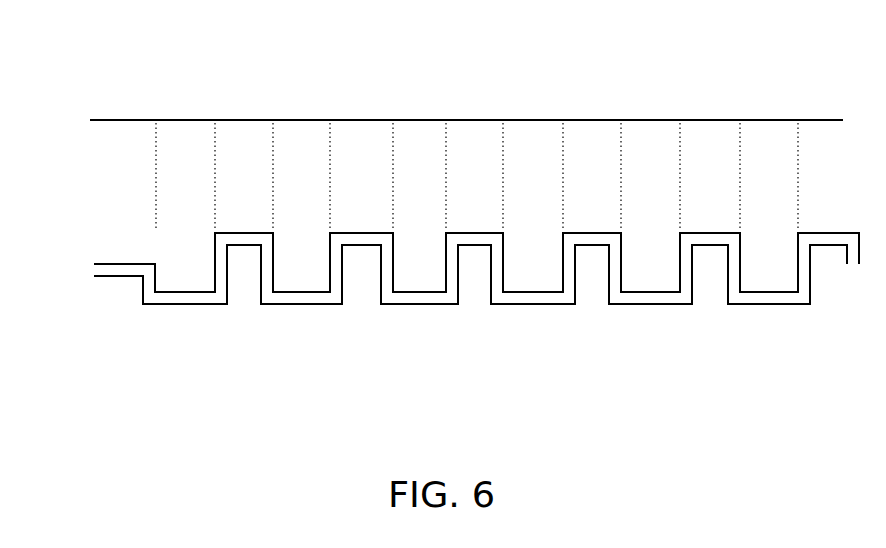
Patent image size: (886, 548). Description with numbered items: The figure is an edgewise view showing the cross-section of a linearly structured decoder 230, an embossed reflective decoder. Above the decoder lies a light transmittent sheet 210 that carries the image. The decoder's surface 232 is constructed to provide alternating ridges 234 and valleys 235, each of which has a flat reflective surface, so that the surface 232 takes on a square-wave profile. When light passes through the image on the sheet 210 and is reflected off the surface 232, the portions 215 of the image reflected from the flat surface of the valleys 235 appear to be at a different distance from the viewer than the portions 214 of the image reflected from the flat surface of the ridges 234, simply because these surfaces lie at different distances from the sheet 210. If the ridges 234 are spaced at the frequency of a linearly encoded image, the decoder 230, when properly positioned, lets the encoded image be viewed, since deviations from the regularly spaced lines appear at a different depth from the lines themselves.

The light transmittent sheet 210 is at (125, 120).
The portions of the image 214 is at (240, 120).
The portions of the image 215 is at (175, 120).
The linearly structured decoder 230 is at (283, 358).
The surface 232 is at (265, 232).
The ridges 234 is at (593, 232).
The valleys 235 is at (515, 292).